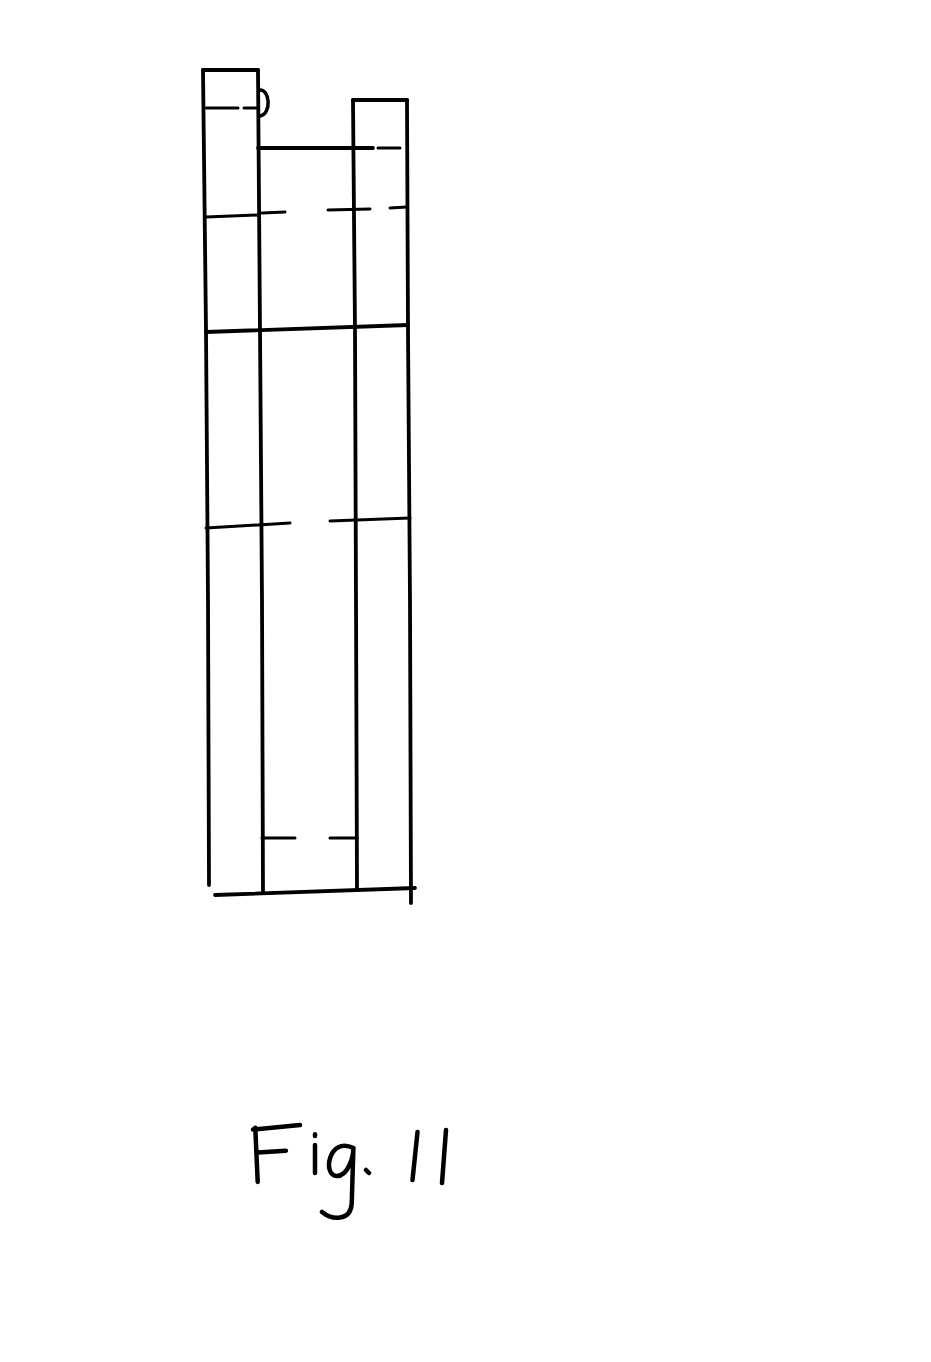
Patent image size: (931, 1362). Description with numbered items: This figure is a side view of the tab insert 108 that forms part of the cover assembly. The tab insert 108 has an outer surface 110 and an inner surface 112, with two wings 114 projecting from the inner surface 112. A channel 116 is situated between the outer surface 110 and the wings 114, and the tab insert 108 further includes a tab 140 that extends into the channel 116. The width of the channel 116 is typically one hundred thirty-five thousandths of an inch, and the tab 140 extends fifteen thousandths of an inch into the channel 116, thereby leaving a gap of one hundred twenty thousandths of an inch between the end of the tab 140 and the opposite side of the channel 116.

The tab insert 108 is at (805, 304).
The outer surface 110 is at (84, 478).
The inner surface 112 is at (633, 529).
The wings 114 is at (548, 167).
The channel 116 is at (317, 117).
The tab 140 is at (277, 90).